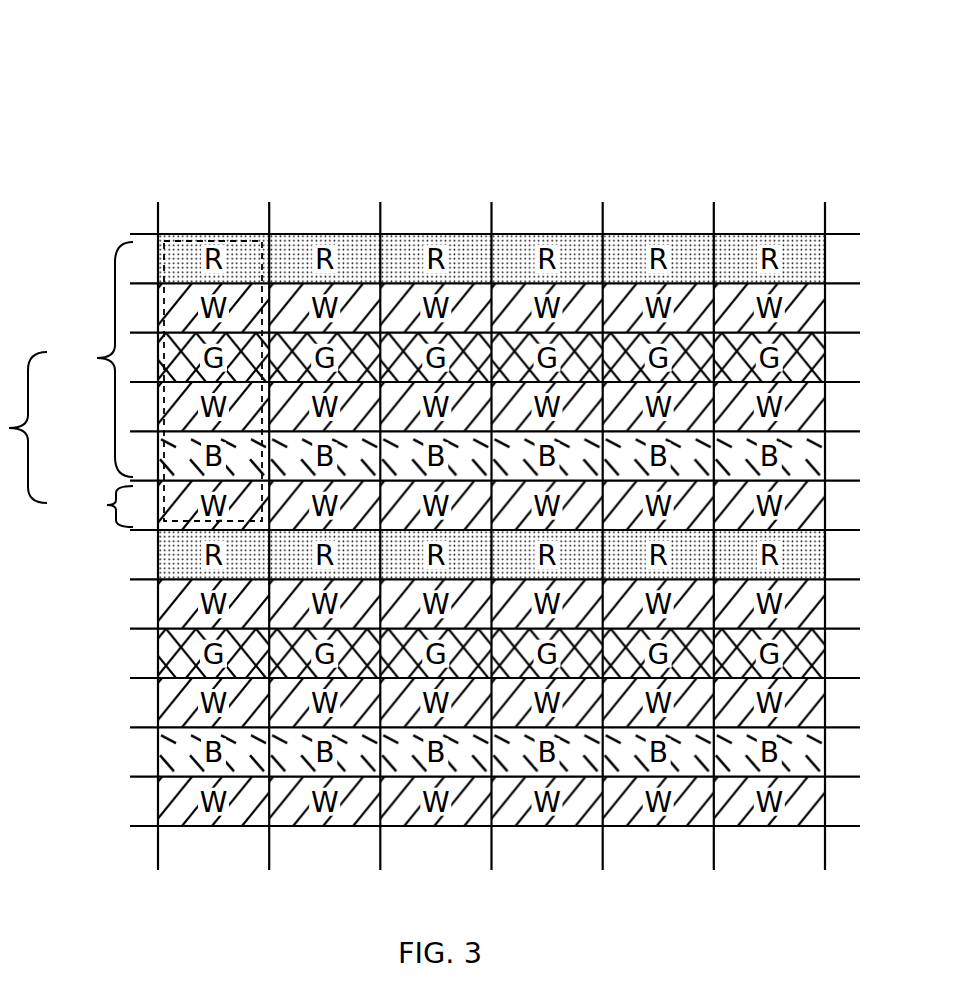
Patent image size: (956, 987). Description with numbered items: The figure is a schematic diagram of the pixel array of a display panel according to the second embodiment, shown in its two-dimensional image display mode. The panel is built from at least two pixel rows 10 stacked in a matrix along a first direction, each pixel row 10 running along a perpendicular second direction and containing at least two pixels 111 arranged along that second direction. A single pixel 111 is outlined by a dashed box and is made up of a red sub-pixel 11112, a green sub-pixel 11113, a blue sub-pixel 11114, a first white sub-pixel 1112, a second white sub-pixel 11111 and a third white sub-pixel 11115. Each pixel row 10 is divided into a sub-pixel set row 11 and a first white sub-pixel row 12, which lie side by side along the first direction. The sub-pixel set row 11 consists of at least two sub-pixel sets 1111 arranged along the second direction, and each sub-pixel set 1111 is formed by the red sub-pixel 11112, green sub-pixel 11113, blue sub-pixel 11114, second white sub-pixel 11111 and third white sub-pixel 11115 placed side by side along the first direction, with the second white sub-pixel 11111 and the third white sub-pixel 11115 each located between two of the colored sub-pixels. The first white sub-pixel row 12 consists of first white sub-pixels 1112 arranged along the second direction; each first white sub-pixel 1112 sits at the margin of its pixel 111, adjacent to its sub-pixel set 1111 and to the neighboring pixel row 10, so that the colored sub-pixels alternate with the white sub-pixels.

The pixel row 10 is at (9, 428).
The sub-pixel set row 11 is at (442, 246).
The first white sub-pixel row 12 is at (107, 505).
The pixel 111 is at (197, 240).
The sub-pixel set 1111 is at (360, 15).
The first white sub-pixel 1112 is at (164, 514).
The second white sub-pixel 11111 is at (292, 396).
The red sub-pixel 11112 is at (250, 270).
The green sub-pixel 11113 is at (273, 364).
The blue sub-pixel 11114 is at (270, 457).
The third white sub-pixel 11115 is at (263, 295).